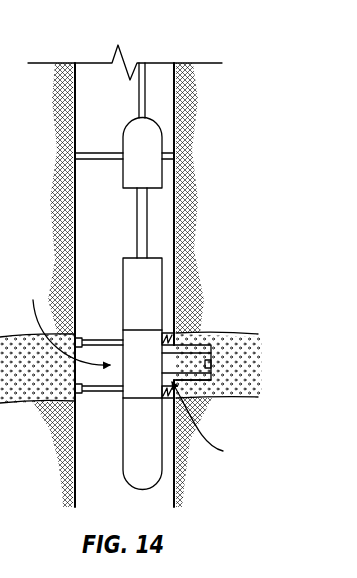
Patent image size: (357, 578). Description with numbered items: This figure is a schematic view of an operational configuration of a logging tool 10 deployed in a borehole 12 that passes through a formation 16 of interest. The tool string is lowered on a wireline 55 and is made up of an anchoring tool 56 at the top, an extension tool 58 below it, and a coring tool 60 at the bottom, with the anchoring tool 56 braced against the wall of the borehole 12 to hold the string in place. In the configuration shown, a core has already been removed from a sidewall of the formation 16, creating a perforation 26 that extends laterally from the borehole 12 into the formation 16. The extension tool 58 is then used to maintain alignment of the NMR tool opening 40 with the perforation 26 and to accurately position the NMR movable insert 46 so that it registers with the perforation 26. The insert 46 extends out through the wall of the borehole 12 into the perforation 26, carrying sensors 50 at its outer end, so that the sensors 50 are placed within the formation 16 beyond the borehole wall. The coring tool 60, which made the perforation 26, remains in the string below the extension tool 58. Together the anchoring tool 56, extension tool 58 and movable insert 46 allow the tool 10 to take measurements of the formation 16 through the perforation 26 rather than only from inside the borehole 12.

The Pump/Packer/Drilling/Logging tool 10 is at (67, 320).
The borehole 12 is at (172, 80).
The formation 16 is at (191, 255).
The perforation 26 is at (200, 387).
The NMR tool opening 40 is at (212, 426).
The NMR tool movable insert 46 is at (192, 353).
The sensors 50 is at (213, 362).
The wireline 55 is at (139, 90).
The anchoring tool 56 is at (155, 166).
The extension tool 58 is at (155, 304).
The coring tool 60 is at (110, 457).